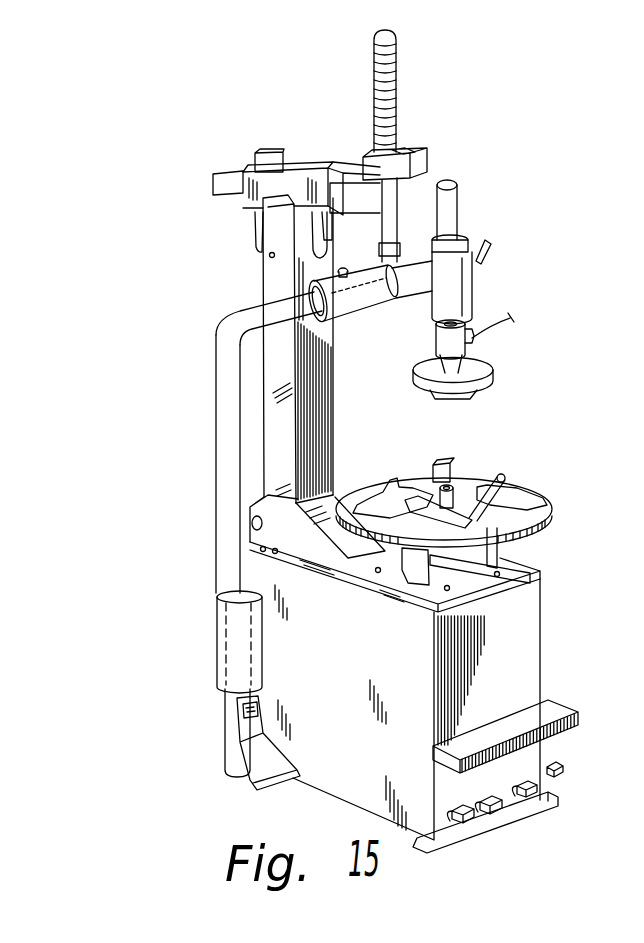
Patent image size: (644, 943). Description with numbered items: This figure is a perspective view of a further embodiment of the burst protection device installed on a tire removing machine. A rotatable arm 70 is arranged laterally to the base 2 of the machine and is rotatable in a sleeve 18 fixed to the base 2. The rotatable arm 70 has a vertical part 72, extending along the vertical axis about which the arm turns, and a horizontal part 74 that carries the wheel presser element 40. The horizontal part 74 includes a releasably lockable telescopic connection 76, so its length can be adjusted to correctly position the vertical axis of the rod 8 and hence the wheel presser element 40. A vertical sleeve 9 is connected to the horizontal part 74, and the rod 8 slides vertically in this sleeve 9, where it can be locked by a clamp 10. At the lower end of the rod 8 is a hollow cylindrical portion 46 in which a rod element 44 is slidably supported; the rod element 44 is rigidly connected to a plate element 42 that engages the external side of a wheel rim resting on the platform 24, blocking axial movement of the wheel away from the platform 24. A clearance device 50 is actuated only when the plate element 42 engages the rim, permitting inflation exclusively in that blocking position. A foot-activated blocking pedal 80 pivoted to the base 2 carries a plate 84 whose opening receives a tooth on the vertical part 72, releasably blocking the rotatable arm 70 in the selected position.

The base of tire removing machine 2 is at (530, 657).
The rod 8 is at (449, 213).
The sleeve 9 is at (472, 291).
The clamp 10 is at (490, 245).
The sleeve 18 is at (227, 630).
The platform 24 is at (550, 506).
The wheel presser element 40 is at (512, 385).
The plate element 42 is at (461, 392).
The rod element 44 is at (451, 366).
The hollow cylindrical portion 46 is at (440, 345).
The clearance device 50 is at (472, 345).
The rotatable arm 70 is at (205, 450).
The vertical part 72 is at (225, 412).
The horizontal part 74 is at (347, 326).
The telescopic connection 76 is at (365, 262).
The blocking pedal 80 is at (214, 780).
The plate 84 is at (250, 727).